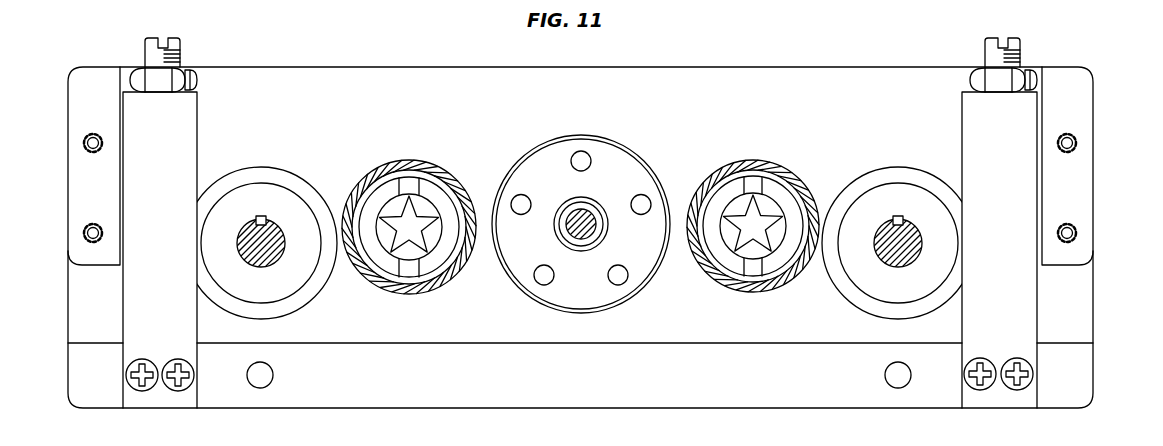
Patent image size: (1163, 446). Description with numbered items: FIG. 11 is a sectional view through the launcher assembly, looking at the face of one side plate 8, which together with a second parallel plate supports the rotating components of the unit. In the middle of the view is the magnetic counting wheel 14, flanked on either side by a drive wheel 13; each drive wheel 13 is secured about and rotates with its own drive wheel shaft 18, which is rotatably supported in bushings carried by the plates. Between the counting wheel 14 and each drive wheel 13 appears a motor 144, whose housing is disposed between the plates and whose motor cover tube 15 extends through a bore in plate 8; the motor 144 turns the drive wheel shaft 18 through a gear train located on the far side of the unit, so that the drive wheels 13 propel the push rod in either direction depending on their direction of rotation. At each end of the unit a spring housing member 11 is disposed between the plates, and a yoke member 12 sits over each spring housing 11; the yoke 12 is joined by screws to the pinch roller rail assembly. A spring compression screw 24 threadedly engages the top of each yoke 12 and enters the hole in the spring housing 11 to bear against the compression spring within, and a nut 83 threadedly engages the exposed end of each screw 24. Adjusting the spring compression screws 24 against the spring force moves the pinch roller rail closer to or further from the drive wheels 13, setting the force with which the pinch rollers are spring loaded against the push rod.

The side plate 8 is at (826, 68).
The spring housing member 11 is at (458, 409).
The yoke member 12 is at (200, 95).
The drive wheel 13 is at (277, 318).
The magnetic counting wheel 14 is at (617, 145).
The motor cover tube 15 is at (423, 282).
The drive wheel shaft 18 is at (279, 231).
The spring compression screw 24 is at (143, 50).
The nut 83 is at (185, 70).
The motor 144 is at (380, 272).